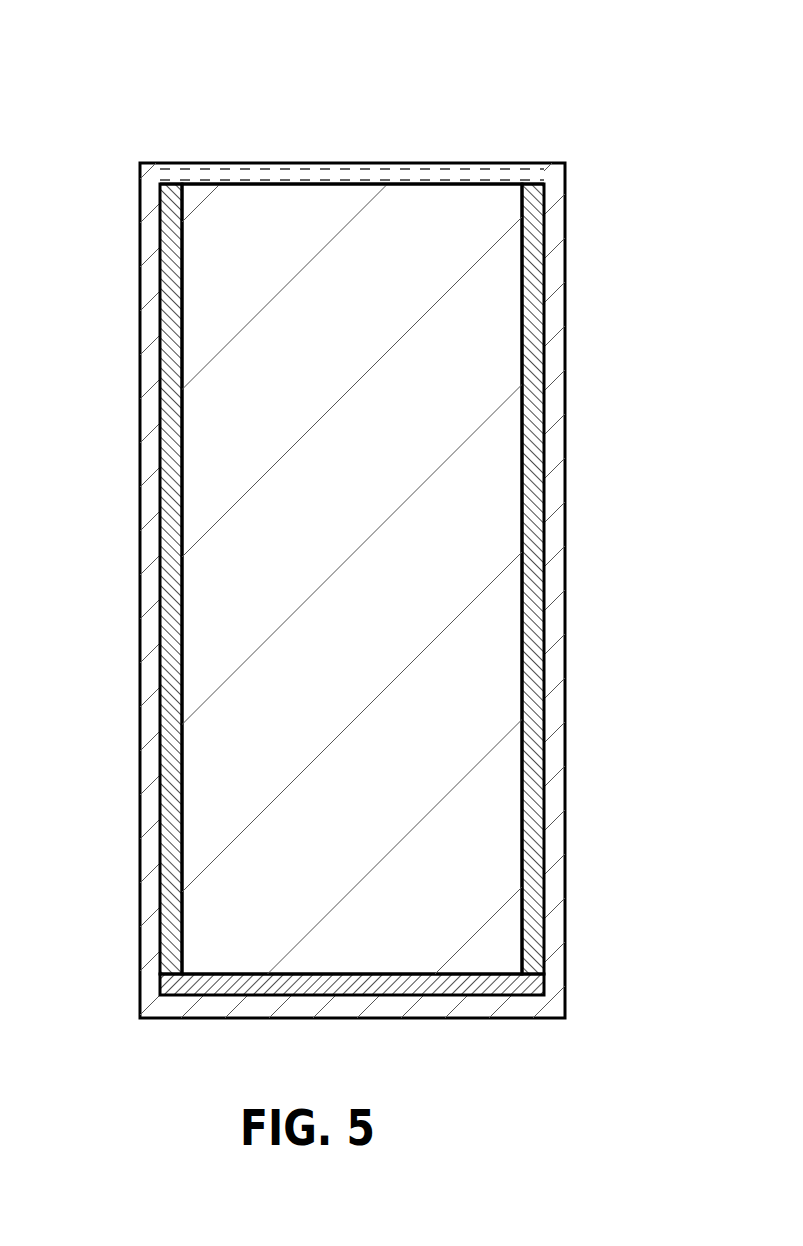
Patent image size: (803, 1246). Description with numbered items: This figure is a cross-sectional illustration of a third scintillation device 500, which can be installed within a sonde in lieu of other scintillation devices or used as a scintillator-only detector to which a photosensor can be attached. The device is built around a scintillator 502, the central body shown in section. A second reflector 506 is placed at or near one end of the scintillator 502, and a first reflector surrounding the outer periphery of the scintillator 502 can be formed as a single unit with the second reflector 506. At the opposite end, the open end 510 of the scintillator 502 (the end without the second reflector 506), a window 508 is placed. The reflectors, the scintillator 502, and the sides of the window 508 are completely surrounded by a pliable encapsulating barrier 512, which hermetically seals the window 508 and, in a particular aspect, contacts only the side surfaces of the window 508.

The third scintillation device 500 is at (589, 107).
The scintillator 502 is at (458, 830).
The second reflector 506 is at (383, 978).
The window 508 is at (197, 173).
The open end 510 is at (439, 201).
The pliable encapsulating barrier 512 is at (552, 661).